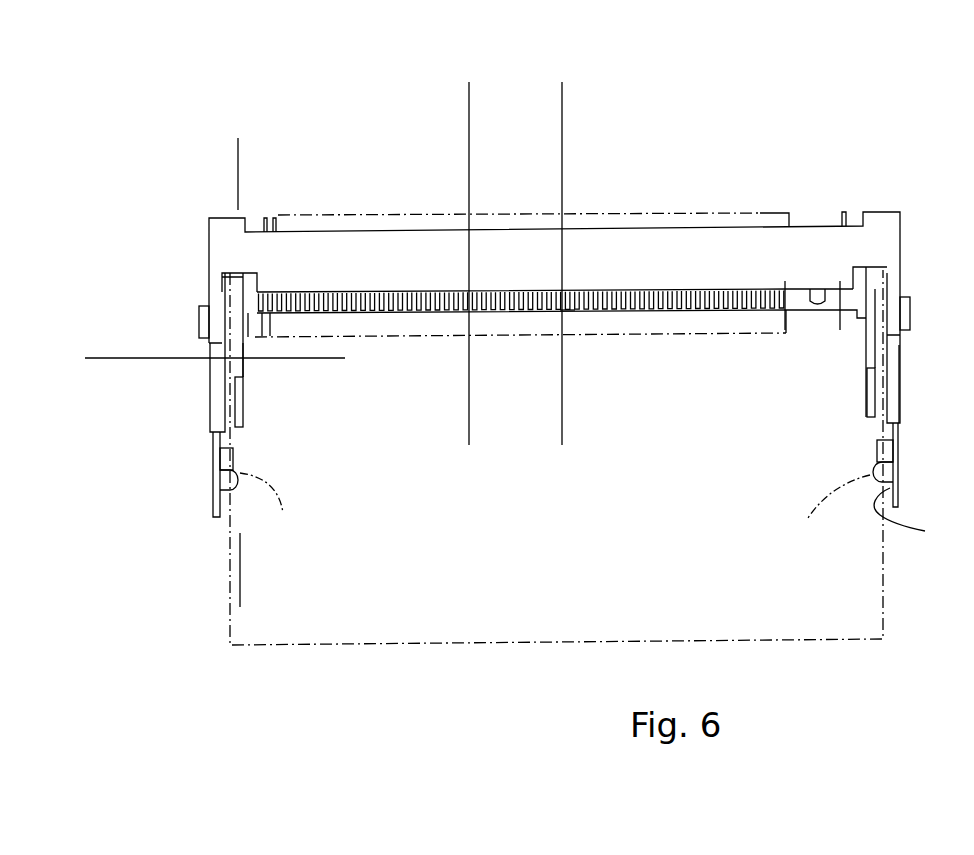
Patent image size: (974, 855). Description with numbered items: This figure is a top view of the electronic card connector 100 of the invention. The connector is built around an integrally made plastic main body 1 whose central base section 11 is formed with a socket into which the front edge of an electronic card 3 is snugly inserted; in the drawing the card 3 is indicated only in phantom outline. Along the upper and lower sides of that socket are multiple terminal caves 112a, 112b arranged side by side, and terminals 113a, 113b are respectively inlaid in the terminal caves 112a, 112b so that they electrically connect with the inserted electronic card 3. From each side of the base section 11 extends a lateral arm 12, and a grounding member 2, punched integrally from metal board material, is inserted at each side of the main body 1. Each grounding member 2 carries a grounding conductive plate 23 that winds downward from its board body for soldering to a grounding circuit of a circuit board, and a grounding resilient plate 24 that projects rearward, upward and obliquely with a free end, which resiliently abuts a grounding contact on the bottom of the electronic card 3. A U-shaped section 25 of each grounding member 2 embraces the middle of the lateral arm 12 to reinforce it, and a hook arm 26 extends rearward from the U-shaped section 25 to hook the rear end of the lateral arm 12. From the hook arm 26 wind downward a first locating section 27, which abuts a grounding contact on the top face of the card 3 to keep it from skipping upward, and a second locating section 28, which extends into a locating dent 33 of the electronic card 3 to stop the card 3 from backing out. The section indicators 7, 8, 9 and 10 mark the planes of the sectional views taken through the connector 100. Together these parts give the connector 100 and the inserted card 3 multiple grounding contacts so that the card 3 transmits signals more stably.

The electronic card connector 100 is at (683, 143).
The plastic main body 1 is at (633, 238).
The base section 11 is at (735, 245).
The terminal caves 112a is at (467, 226).
The terminal caves 112b is at (565, 312).
The terminals 113a is at (792, 214).
The terminals 113b is at (790, 318).
The grounding member 2 is at (247, 391).
The electronic card 3 is at (555, 645).
The lateral arm 12 is at (895, 446).
The grounding conductive plate 23 is at (202, 322).
The grounding resilient plate 24 is at (245, 428).
The U-shaped section 25 is at (212, 380).
The hook arm 26 is at (916, 518).
The first locating section 27 is at (222, 452).
The second locating section 28 is at (222, 483).
The locating dent 33 is at (555, 508).
The section line 7 is at (469, 82).
The section line 8 is at (562, 82).
The section line 9 is at (238, 138).
The section line 10 is at (85, 360).